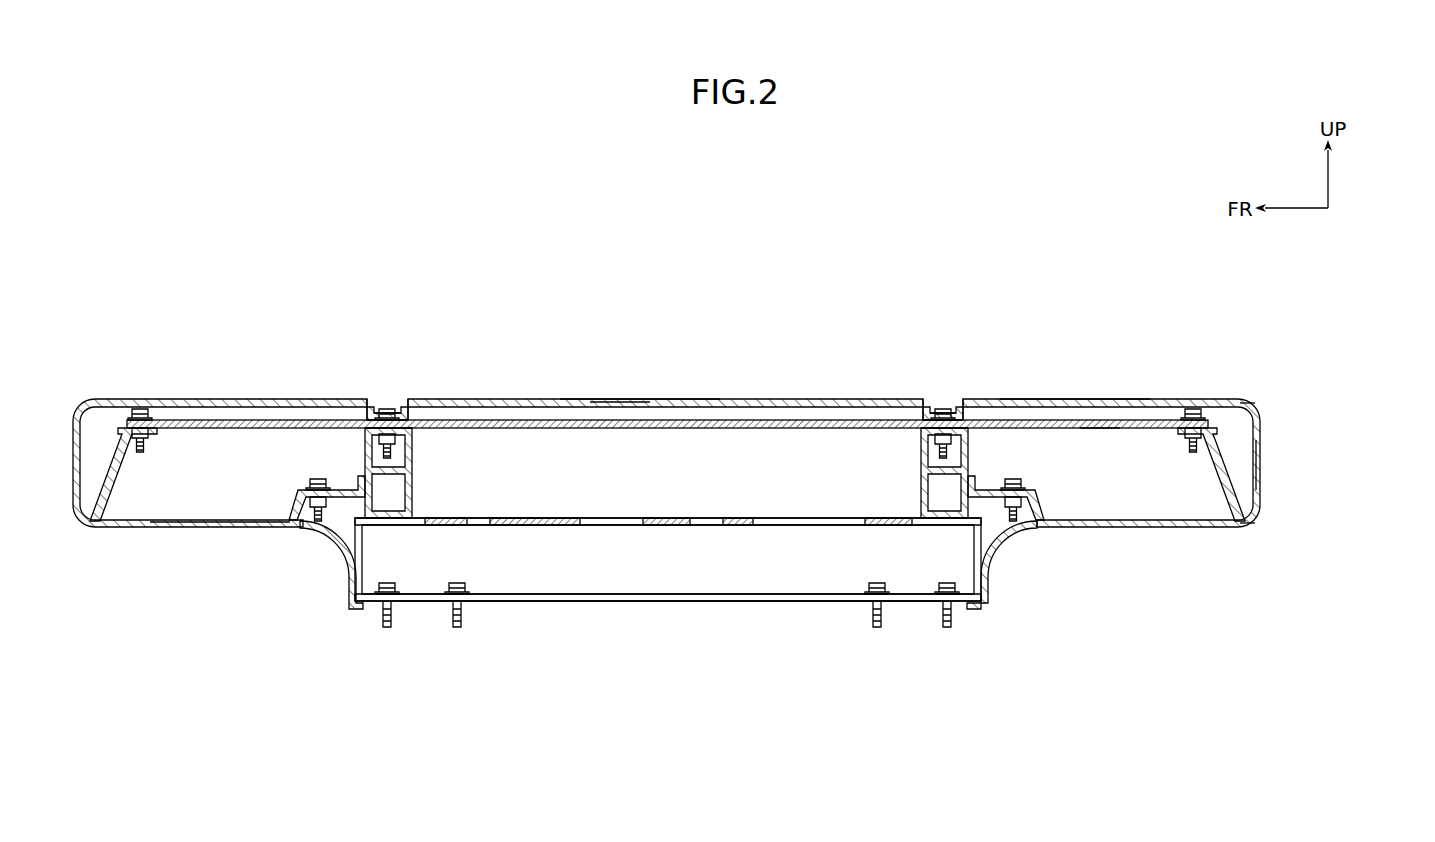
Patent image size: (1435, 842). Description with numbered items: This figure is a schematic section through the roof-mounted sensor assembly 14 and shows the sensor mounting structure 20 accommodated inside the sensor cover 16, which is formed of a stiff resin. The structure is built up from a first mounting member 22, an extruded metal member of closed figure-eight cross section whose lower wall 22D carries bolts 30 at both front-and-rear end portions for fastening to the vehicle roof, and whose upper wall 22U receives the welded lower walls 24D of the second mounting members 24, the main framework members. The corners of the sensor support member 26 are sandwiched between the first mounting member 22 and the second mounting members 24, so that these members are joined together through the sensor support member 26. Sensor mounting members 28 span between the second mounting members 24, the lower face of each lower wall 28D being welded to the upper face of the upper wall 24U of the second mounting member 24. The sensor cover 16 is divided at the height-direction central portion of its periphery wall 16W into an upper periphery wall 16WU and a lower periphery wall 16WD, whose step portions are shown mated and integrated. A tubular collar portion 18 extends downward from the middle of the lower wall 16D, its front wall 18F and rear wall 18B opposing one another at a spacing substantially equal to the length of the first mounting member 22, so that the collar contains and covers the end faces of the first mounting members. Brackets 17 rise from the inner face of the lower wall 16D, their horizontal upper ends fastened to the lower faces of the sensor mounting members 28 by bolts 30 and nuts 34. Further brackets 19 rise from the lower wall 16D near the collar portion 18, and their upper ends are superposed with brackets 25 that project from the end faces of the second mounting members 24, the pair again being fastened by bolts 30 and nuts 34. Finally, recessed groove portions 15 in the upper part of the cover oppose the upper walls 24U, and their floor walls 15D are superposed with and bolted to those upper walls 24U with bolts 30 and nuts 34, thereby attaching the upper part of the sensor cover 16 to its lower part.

The vehicle lower structure 14 is at (617, 344).
The recessed groove portion 15 is at (371, 394).
The floor wall 15D is at (404, 412).
The sensor cover 16 is at (98, 394).
The lower wall 16D is at (147, 530).
The periphery wall 16W is at (1356, 410).
The upper periphery wall 16WU is at (1262, 428).
The lower periphery wall 16WD is at (1262, 497).
The bracket 17 is at (118, 478).
The collar portion 18 is at (346, 608).
The front wall 18F is at (348, 583).
The rear wall 18B is at (989, 583).
The bracket 19 is at (297, 508).
The sensor mounting structure 20 is at (636, 402).
The first mounting member 22 is at (626, 606).
The upper wall 22U is at (720, 518).
The lower wall 22D is at (677, 601).
The second mounting member 24 is at (422, 492).
The upper wall 24U is at (412, 420).
The lower wall 24D is at (385, 528).
The bracket 25 is at (350, 490).
The sensor support member 26 is at (617, 518).
The sensor mounting member 28 is at (1061, 402).
The lower wall 28D is at (1097, 432).
The bolt 30 is at (666, 516).
The nut 34 is at (666, 497).